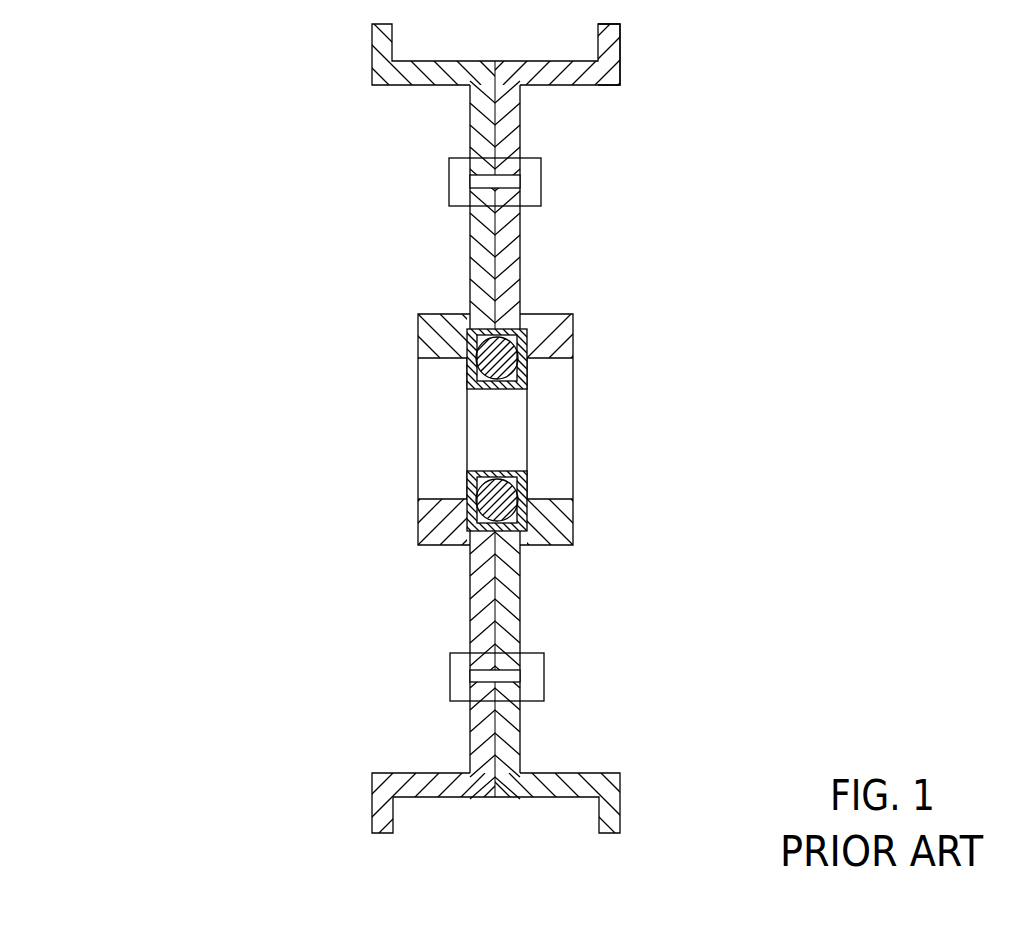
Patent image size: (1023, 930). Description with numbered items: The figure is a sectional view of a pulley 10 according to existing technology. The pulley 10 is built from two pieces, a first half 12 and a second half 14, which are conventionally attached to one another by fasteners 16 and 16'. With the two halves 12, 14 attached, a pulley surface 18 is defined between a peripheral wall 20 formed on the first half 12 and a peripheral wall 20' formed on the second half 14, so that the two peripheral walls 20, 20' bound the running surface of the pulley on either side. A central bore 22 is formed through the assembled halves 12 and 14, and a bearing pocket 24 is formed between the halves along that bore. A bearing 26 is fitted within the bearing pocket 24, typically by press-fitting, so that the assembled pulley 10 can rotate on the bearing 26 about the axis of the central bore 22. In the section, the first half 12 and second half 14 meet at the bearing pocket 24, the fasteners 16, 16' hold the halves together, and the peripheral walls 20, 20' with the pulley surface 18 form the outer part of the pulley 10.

The pulley 10 is at (296, 267).
The first half 12 is at (482, 255).
The second half 14 is at (515, 605).
The fastener 16 is at (524, 169).
The fastener 16' is at (545, 668).
The pulley surface 18 is at (423, 792).
The peripheral wall 20 is at (492, 42).
The peripheral wall 20' is at (580, 42).
The central bore 22 is at (550, 360).
The bearing pocket 24 is at (473, 433).
The bearing 26 is at (527, 482).